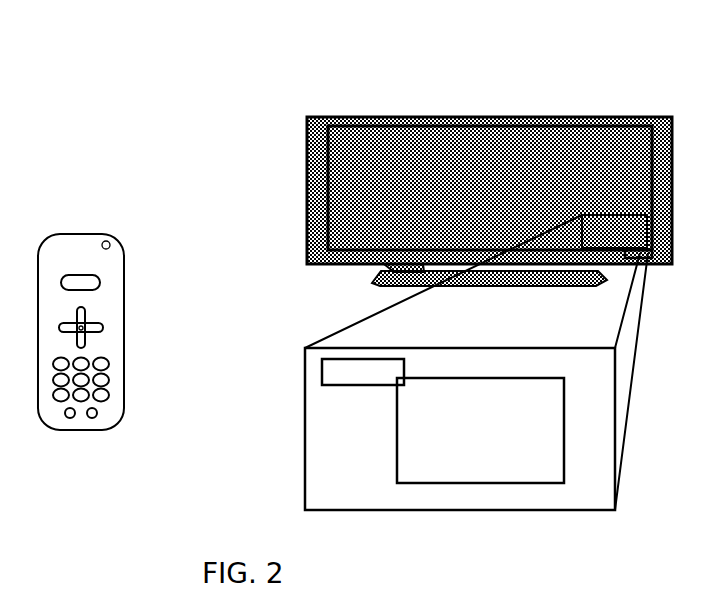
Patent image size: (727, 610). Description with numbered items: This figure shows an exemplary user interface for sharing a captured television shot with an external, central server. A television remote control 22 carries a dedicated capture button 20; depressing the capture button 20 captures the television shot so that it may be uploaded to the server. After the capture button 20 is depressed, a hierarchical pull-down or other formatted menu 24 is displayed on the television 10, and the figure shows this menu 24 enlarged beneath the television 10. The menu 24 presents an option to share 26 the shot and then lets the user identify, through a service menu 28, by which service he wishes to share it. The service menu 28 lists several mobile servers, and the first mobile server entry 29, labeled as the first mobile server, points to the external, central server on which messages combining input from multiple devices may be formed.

The television 10 is at (660, 123).
The capture button 20 is at (101, 282).
The television remote control 22 is at (108, 332).
The menu 24 is at (626, 240).
The option to share 26 is at (333, 385).
The service menu 28 is at (556, 482).
The Mobile Server 1 entry 29 is at (546, 404).